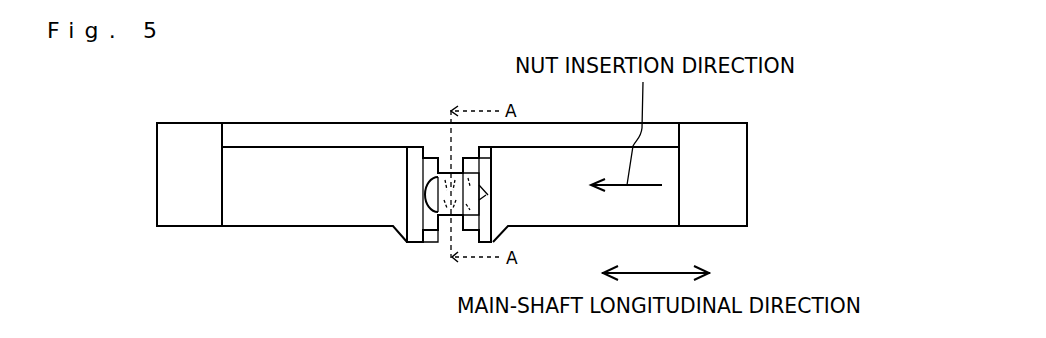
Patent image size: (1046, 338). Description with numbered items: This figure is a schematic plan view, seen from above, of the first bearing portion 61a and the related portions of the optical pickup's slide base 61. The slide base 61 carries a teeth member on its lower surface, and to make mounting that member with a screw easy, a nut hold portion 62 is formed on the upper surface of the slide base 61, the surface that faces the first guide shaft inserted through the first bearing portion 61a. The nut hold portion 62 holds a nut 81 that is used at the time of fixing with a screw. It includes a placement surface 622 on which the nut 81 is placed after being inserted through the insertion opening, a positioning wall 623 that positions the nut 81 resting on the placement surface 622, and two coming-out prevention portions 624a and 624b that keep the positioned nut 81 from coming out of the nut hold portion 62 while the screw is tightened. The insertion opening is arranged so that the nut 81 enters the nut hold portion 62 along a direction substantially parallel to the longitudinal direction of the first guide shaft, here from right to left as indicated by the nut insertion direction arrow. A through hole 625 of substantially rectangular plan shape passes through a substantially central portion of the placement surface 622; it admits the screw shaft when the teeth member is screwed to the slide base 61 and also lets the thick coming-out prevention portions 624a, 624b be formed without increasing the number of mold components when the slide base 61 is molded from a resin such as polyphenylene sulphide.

The slide base 61 is at (308, 217).
The first bearing portion 61a is at (168, 160).
The nut hold portion 62 is at (415, 224).
The placement surface 622 is at (424, 190).
The positioning wall 623 is at (407, 163).
The coming-out prevention portion 624a is at (492, 157).
The coming-out prevention portion 624b is at (443, 222).
The through hole 625 is at (437, 160).
The nut 81 is at (490, 206).